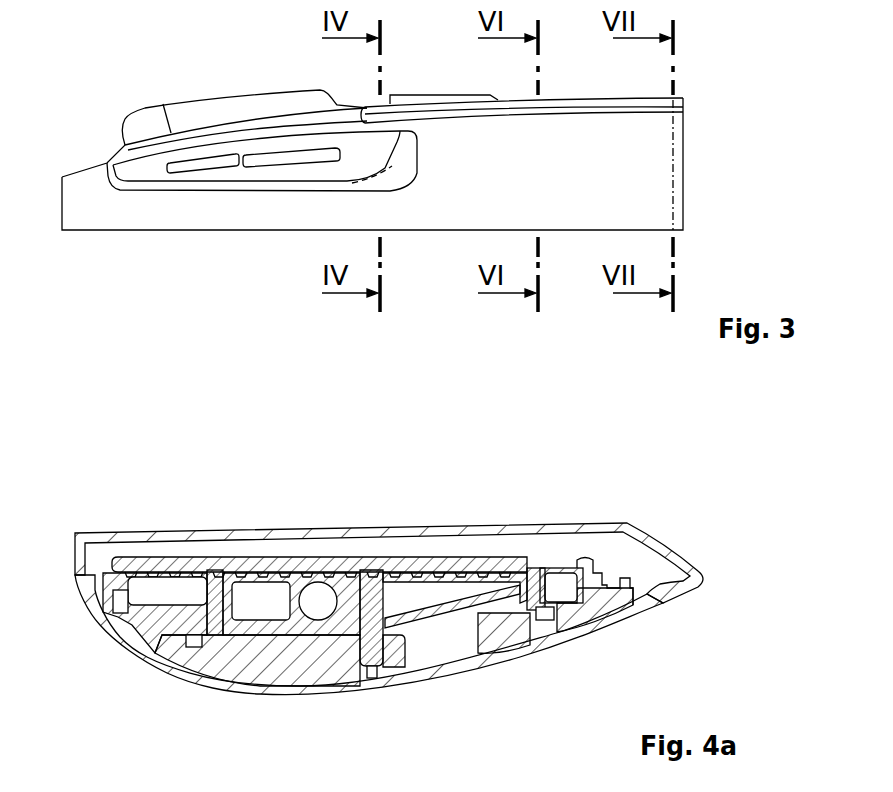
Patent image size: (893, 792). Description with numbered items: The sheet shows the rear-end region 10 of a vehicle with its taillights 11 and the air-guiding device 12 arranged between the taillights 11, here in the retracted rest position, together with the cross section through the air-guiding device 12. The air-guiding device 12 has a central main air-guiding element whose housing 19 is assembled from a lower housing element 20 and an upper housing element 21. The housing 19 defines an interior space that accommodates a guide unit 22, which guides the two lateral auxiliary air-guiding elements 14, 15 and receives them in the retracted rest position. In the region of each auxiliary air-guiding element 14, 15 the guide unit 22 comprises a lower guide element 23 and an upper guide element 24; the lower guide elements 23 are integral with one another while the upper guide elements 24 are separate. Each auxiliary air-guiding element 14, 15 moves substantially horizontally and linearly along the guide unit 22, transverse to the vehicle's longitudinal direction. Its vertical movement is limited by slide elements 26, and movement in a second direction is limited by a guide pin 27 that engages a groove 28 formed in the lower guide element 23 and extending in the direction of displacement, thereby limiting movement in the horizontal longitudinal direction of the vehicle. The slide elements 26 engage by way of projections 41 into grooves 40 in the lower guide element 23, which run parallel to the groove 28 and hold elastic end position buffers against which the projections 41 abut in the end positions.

In FIG. 3, the rear-end region 10 is at (112, 104).
In FIG. 3, the taillights 11 is at (204, 184).
In FIG. 3, the air-guiding device 12 is at (577, 90).
In FIG. 4A, the auxiliary air-guiding element 14 is at (452, 672).
In FIG. 4A, the auxiliary air-guiding element 15 is at (428, 616).
In FIG. 4A, the housing 19 is at (389, 617).
In FIG. 4A, the lower housing element 20 is at (160, 667).
In FIG. 4A, the upper housing element 21 is at (273, 537).
In FIG. 4A, the guide unit 22 is at (372, 617).
In FIG. 4A, the lower guide element 23 is at (253, 668).
In FIG. 4A, the upper guide element 24 is at (441, 560).
In FIG. 4A, the slide element 26 is at (215, 570).
In FIG. 4A, the guide pin 27 is at (372, 575).
In FIG. 4A, the groove 28 is at (368, 688).
In FIG. 4A, the grooves 40 is at (193, 660).
In FIG. 4A, the projections 41 is at (200, 630).